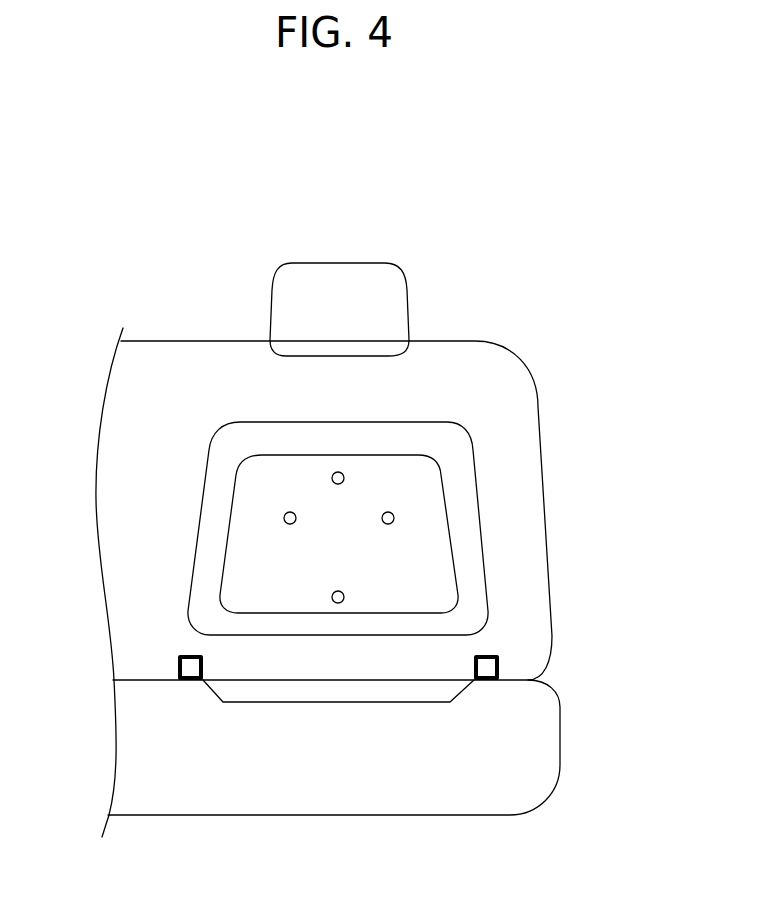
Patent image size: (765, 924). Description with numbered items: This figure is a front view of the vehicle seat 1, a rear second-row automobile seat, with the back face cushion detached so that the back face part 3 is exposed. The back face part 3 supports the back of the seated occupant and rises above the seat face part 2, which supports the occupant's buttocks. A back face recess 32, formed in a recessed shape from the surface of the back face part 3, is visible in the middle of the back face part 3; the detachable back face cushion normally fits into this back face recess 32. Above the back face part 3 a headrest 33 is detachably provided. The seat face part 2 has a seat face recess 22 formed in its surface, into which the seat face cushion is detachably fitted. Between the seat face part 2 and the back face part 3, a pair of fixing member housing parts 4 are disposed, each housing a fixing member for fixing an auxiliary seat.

The vehicle seat 1 is at (155, 207).
The seat face part 2 is at (560, 760).
The back face part 3 is at (538, 418).
The fixing member housing part 4 is at (173, 668).
The seat face recess 22 is at (334, 697).
The back face recess 32 is at (468, 503).
The headrest 33 is at (407, 298).